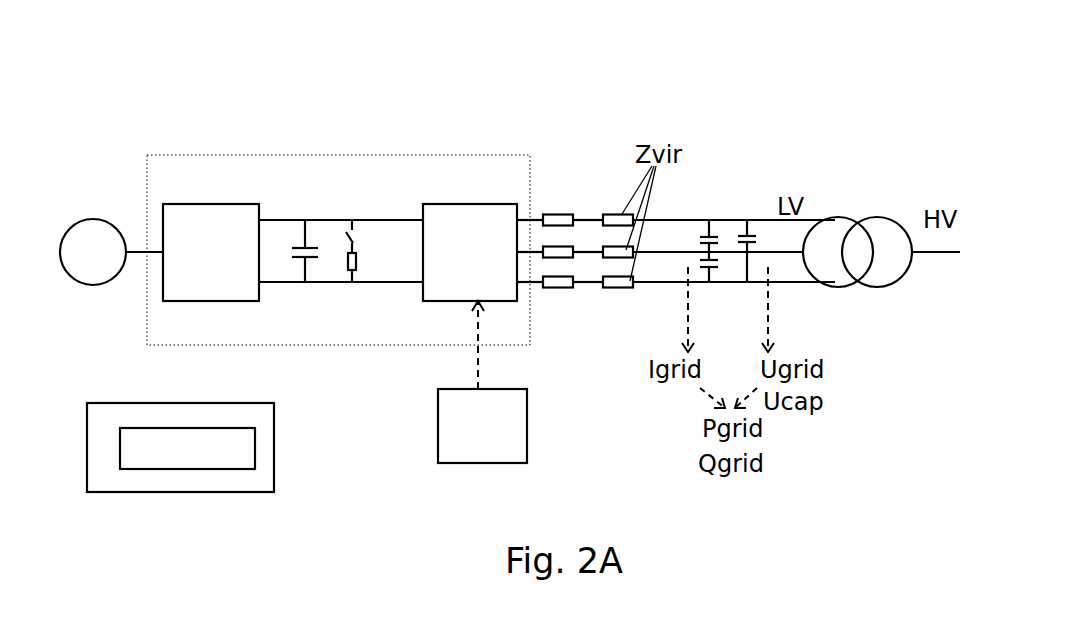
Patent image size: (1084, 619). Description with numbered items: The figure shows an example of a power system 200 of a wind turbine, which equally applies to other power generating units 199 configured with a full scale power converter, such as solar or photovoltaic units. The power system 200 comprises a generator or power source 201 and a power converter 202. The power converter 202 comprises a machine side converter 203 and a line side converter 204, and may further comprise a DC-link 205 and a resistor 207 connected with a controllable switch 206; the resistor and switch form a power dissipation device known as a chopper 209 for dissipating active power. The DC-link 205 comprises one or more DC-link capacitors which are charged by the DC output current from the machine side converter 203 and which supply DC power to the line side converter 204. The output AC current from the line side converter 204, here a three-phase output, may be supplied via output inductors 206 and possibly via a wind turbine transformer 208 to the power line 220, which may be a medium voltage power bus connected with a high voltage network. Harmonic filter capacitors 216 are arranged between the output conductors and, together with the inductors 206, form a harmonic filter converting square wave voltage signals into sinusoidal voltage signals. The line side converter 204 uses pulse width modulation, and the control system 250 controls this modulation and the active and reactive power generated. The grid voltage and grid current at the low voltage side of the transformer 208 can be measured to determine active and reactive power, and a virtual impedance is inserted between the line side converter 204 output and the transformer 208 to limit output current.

The power generating unit 199 is at (153, 498).
The power system 200 is at (350, 50).
The generator or power source 201 is at (82, 215).
The power converter 202 is at (330, 147).
The machine side converter 203 is at (203, 189).
The line side converter 204 is at (465, 192).
The DC-link 205 is at (300, 230).
The controllable switch / output inductors 206 is at (356, 231).
The resistor 207 is at (356, 260).
The wind turbine transformer 208 is at (852, 213).
The chopper 209 is at (440, 243).
The harmonic filter capacitors 216 is at (720, 227).
The power line 220 is at (938, 257).
The control system 250 is at (437, 427).